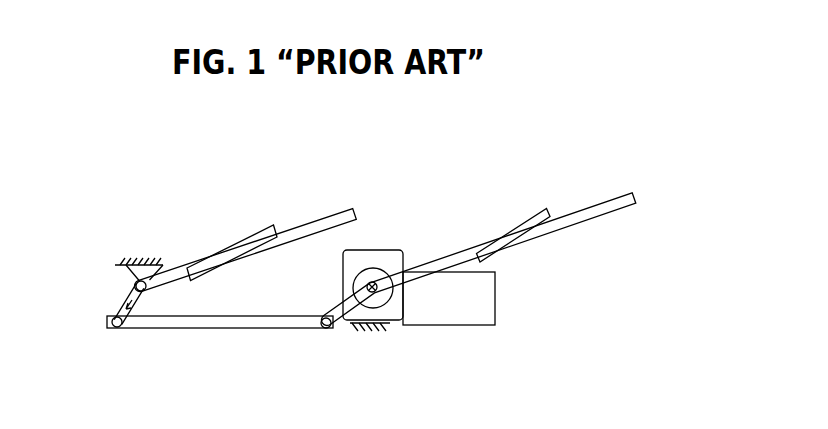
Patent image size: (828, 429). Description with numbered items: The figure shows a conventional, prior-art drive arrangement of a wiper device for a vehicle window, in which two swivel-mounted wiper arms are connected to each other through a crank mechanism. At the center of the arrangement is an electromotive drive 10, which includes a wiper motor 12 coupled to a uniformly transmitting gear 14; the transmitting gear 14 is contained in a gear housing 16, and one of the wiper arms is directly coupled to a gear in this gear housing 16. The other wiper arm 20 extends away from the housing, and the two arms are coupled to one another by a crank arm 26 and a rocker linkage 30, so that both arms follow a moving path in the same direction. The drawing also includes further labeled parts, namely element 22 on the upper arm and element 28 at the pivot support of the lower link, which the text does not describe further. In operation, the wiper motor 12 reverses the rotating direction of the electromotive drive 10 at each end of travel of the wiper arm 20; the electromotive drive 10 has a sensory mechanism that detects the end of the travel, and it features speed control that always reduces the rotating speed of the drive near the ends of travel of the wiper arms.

The electromotive drive 10 is at (420, 251).
The wiper motor 12 is at (468, 307).
The uniformly transmitting gear 14 is at (392, 312).
The gear housing 16 is at (372, 282).
The wiper arm 20 is at (193, 262).
The upper plate 22 is at (598, 207).
The crank arm 26 is at (331, 302).
The pivot support strut 28 is at (167, 255).
The rocker linkage 30 is at (226, 317).